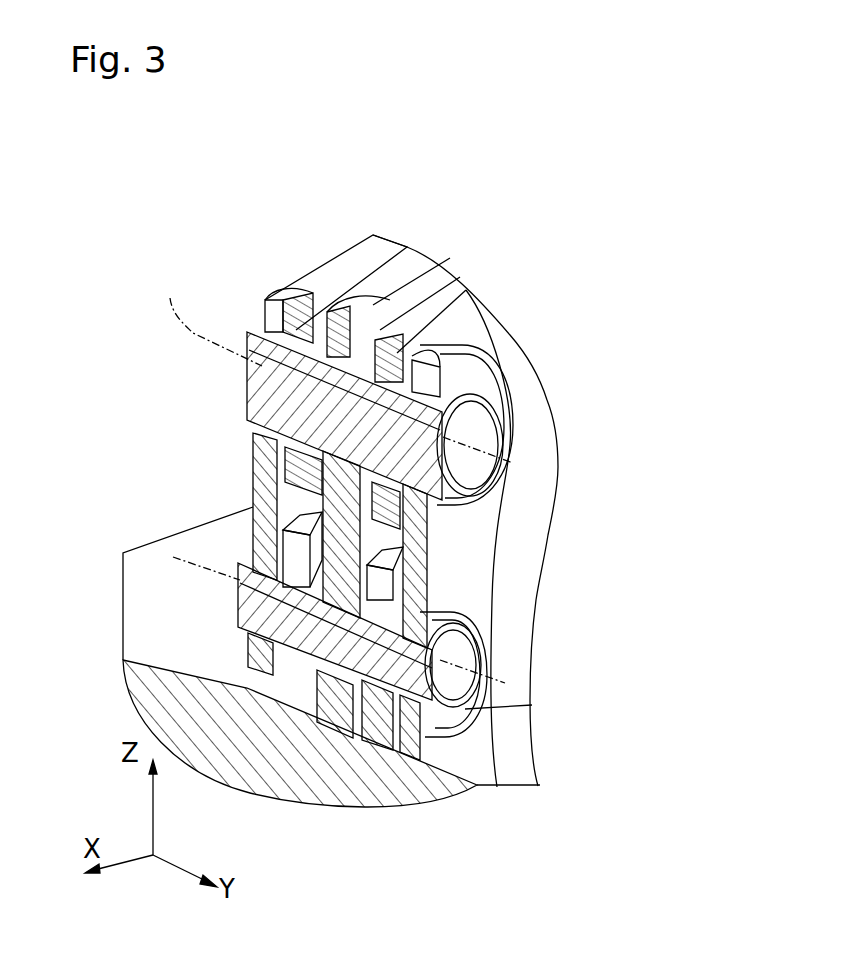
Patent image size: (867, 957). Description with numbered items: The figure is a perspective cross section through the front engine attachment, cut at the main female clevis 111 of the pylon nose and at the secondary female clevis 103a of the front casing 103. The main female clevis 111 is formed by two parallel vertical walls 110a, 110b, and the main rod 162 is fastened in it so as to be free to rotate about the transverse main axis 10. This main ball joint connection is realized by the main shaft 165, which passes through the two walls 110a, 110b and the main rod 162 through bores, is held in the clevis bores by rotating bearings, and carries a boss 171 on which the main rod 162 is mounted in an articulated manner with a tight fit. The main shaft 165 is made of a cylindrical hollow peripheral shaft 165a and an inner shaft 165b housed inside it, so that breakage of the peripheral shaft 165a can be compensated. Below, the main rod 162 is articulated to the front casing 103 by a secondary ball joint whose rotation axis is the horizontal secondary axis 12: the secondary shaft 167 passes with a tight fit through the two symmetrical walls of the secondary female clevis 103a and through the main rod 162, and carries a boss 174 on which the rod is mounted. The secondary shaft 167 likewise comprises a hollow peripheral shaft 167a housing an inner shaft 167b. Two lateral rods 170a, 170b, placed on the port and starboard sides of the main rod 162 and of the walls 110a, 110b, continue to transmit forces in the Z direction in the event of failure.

The main axis 10 is at (208, 315).
The secondary axis 12 is at (498, 790).
The front casing 103 is at (335, 803).
The secondary female clevis 103a is at (252, 520).
The wall 110a is at (380, 247).
The wall 110b is at (447, 295).
The main female clevis 111 is at (418, 260).
The main rod 162 is at (447, 262).
The main shaft 165 is at (483, 397).
The peripheral shaft 165a is at (497, 415).
The inner shaft 165b is at (483, 440).
The secondary shaft 167 is at (462, 640).
The peripheral shaft 167a is at (467, 662).
The inner shaft 167b is at (470, 668).
The lateral rod 170a is at (468, 535).
The lateral rod 170b is at (283, 296).
The boss 171 is at (247, 447).
The boss 174 is at (247, 560).